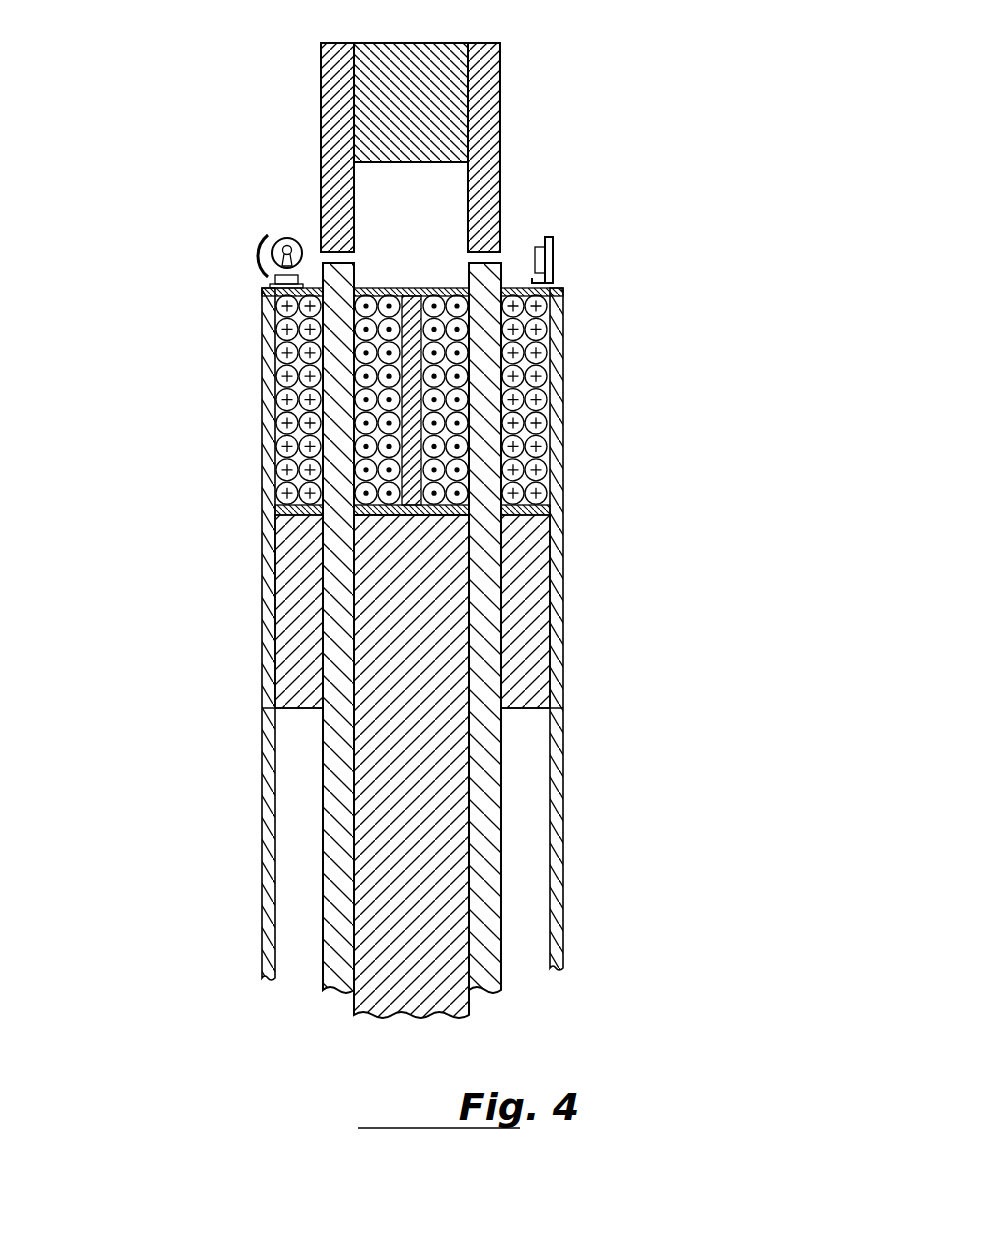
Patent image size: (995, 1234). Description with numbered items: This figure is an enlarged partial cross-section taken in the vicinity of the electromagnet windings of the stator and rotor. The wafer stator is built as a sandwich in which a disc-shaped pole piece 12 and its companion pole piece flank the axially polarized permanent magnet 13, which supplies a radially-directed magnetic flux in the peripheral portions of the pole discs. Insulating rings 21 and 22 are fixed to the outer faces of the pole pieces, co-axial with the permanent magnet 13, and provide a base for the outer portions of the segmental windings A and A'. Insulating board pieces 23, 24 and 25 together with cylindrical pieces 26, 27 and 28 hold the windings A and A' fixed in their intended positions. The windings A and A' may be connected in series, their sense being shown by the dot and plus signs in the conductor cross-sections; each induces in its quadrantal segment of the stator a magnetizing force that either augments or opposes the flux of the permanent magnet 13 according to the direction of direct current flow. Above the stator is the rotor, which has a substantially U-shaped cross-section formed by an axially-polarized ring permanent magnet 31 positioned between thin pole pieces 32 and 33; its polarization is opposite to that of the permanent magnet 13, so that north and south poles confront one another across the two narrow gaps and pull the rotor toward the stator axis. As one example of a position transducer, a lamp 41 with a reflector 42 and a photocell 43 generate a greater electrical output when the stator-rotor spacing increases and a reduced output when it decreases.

The pole piece 12 is at (487, 860).
The permanent magnet 13 is at (445, 995).
The insulating ring 21 is at (290, 700).
The insulating ring 22 is at (527, 697).
The insulating board piece 23 is at (267, 642).
The insulating board piece 24 is at (560, 615).
The insulating board piece 25 is at (405, 292).
The cylindrical piece 26 is at (280, 510).
The cylindrical piece 27 is at (397, 507).
The cylindrical piece 28 is at (548, 524).
The permanent magnet 31 is at (430, 45).
The pole piece 32 is at (327, 137).
The pole piece 33 is at (493, 143).
The lamp 41 is at (285, 238).
The reflector 42 is at (258, 251).
The photocell 43 is at (537, 245).
The segmental winding A is at (218, 399).
The segmental winding A' is at (651, 399).